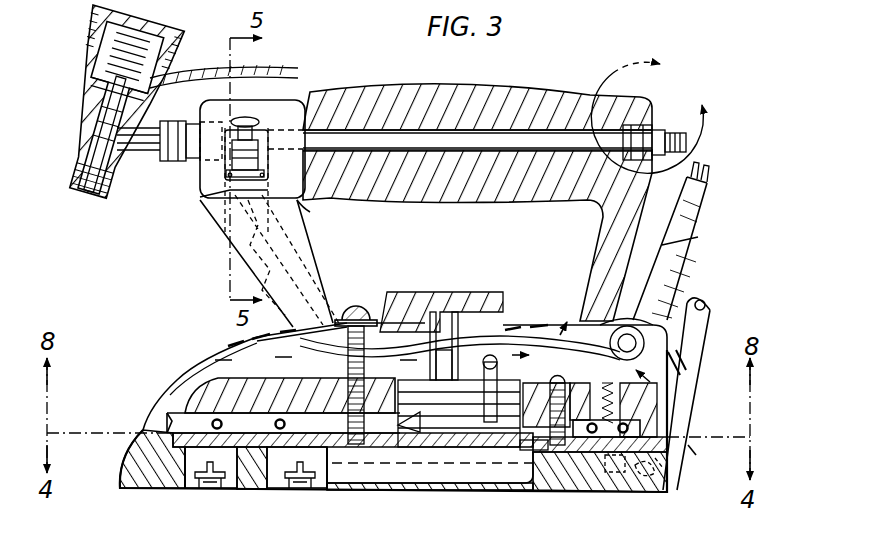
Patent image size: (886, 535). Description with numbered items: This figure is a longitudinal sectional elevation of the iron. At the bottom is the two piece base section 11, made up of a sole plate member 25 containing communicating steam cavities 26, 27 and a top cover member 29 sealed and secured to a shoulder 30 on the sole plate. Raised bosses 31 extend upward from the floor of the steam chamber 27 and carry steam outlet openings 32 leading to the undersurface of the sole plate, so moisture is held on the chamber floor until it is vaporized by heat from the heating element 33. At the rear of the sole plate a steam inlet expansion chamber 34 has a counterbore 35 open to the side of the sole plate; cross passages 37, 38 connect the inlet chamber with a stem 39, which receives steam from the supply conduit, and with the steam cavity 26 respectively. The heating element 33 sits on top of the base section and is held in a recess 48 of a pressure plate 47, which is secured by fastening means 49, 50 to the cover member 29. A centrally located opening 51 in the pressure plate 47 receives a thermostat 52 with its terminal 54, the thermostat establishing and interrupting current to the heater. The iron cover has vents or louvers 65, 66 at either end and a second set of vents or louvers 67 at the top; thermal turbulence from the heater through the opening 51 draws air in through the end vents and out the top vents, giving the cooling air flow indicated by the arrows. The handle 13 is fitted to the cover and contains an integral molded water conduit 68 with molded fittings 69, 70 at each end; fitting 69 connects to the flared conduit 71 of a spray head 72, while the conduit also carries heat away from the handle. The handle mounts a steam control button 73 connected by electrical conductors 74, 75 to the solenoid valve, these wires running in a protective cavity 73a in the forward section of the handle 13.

The two piece base section 11 is at (647, 117).
The handle 13 is at (480, 97).
The sole plate member 25 is at (133, 473).
The steam cavity 26 is at (477, 458).
The steam chamber 27 is at (243, 470).
The top cover member 29 is at (265, 446).
The shoulder 30 is at (183, 465).
The raised bosses 31 is at (256, 467).
The steam outlet openings 32 is at (222, 482).
The heating element 33 is at (193, 423).
The steam inlet expansion chamber 34 is at (657, 469).
The counterbore 35 is at (643, 485).
The cross passage 37 is at (690, 447).
The cross passage 38 is at (620, 458).
The stem 39 is at (703, 303).
The pressure plate 47 is at (210, 387).
The recess 48 is at (169, 420).
The fastening means 49 is at (553, 373).
The fastening means 50 is at (354, 300).
The centrally located opening 51 is at (397, 426).
The thermostat 52 is at (533, 445).
The terminal 54 is at (492, 358).
The vents or louvers 65 is at (228, 346).
The vents or louvers 66 is at (690, 355).
The vents or louvers 67 is at (550, 327).
The water conduit 68 is at (383, 130).
The molded fitting 69 is at (193, 155).
The molded fitting 70 is at (686, 126).
The flared conduit 71 is at (158, 120).
The spray head 72 is at (80, 92).
The steam control button 73 is at (248, 123).
The cavity 73a is at (250, 247).
The electrical conductor 74 is at (233, 191).
The electrical conductor 75 is at (298, 210).